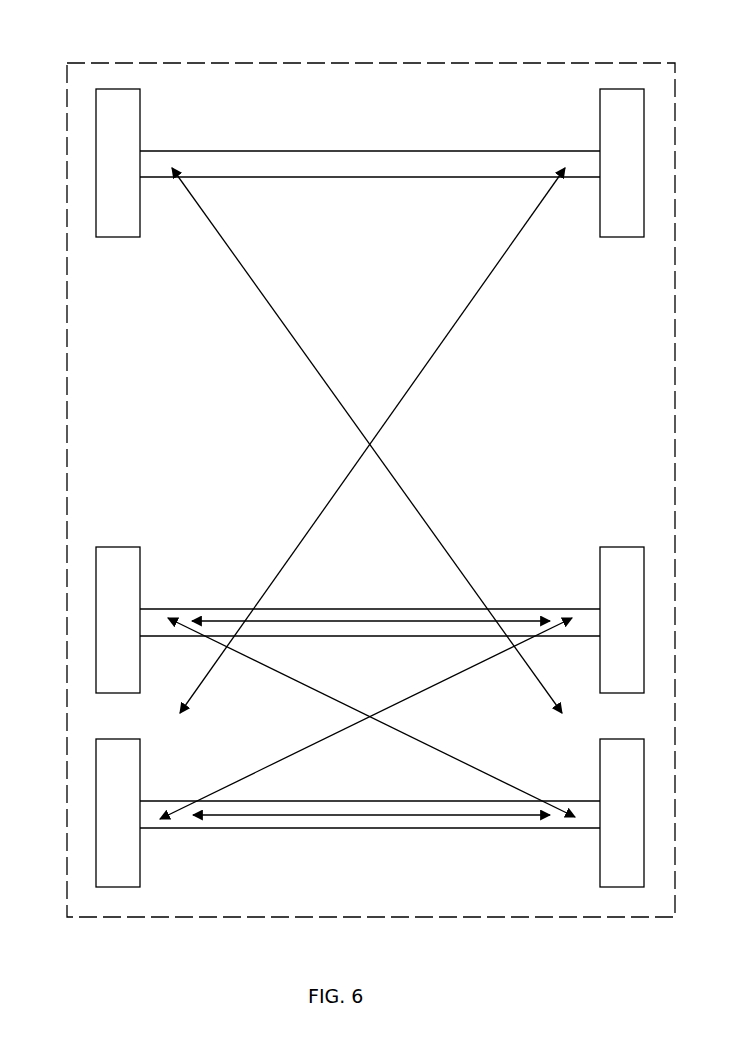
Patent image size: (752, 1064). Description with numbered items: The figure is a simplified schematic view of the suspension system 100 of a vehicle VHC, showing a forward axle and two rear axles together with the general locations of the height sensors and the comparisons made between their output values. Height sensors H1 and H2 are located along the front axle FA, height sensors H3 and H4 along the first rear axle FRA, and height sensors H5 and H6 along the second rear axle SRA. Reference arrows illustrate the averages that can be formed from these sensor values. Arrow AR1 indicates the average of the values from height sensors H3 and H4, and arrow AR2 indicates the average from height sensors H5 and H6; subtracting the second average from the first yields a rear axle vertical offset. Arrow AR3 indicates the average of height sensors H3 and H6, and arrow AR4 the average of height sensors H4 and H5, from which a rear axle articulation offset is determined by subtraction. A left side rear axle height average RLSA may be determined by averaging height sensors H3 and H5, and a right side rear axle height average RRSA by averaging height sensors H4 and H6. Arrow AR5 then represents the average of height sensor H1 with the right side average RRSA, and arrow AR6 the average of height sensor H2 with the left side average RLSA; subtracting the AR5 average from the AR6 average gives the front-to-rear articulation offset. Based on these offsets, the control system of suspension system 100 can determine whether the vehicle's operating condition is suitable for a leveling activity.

The vehicle VHC is at (500, 60).
The suspension system 100 is at (128, 410).
The height sensor H1 is at (138, 163).
The height sensor H2 is at (603, 163).
The height sensor H3 is at (138, 620).
The height sensor H4 is at (603, 620).
The height sensor H5 is at (138, 813).
The height sensor H6 is at (603, 813).
The front axle FA is at (378, 150).
The first rear axle FRA is at (247, 608).
The second rear axle SRA is at (302, 830).
The arrow AR1 is at (422, 620).
The arrow AR2 is at (413, 817).
The arrow AR3 is at (302, 683).
The arrow AR4 is at (443, 685).
The arrow AR5 is at (267, 293).
The arrow AR6 is at (477, 295).
The left side rear axle height average RLSA is at (141, 717).
The right side rear axle height average RRSA is at (591, 718).